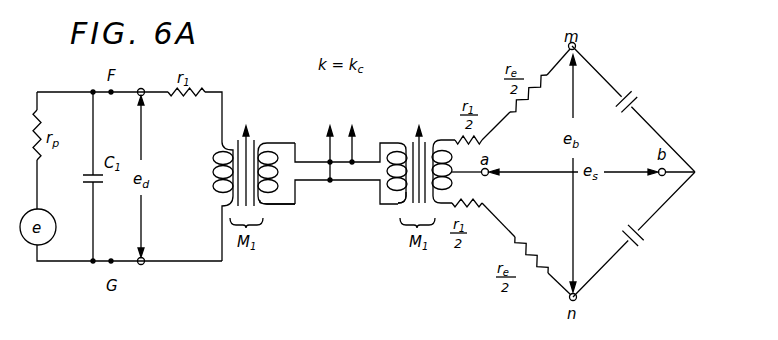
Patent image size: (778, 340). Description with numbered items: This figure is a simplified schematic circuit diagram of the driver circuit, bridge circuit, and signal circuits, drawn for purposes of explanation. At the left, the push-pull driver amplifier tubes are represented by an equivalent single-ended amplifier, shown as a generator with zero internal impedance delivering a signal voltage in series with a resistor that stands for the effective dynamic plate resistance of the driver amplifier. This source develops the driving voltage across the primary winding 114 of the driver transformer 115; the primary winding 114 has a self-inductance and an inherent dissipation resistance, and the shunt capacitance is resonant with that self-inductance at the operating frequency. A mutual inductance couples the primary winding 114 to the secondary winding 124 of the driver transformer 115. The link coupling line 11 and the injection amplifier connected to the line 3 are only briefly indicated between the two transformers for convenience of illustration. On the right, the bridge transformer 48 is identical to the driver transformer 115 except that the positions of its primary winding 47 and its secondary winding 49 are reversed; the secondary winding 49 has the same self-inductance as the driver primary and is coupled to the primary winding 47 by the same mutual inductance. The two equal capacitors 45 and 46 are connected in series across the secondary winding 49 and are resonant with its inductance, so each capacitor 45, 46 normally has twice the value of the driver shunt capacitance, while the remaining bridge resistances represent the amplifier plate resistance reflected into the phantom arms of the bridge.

The line 3 is at (350, 184).
The link coupling line 11 is at (326, 120).
The capacitor 45 is at (620, 113).
The capacitor 46 is at (626, 226).
The primary winding of bridge transformer 47 is at (393, 197).
The bridge transformer 48 is at (409, 143).
The secondary winding 49 is at (451, 134).
The primary winding 114 is at (213, 191).
The driver transformer 115 is at (259, 141).
The secondary winding 124 is at (271, 197).